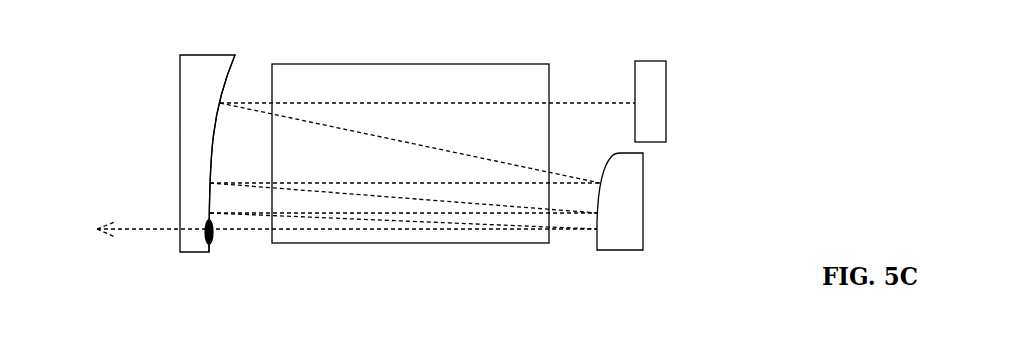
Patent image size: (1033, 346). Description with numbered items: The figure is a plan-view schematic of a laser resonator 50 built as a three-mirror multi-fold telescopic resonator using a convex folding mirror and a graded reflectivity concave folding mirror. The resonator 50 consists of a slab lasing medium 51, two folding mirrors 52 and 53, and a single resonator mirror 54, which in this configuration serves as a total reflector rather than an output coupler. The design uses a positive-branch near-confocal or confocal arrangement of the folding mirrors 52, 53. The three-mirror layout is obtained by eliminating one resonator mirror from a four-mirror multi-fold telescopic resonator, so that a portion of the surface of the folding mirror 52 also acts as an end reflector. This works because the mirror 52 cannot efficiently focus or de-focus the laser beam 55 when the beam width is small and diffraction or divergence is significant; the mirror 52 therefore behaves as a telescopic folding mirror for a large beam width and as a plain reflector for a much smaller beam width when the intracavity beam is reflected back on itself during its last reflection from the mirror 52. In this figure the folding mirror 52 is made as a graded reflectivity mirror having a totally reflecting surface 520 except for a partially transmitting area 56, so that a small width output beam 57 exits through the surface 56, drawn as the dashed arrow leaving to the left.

The laser resonator 50 is at (143, 47).
The slab lasing medium 51 is at (487, 78).
The folding mirror 52 is at (210, 92).
The totally reflecting surface 520 is at (218, 93).
The folding mirror 53 is at (618, 201).
The resonator mirror 54 is at (653, 128).
The laser beam 55 is at (407, 103).
The partially transmitting area 56 is at (180, 222).
The output beam 57 is at (142, 230).